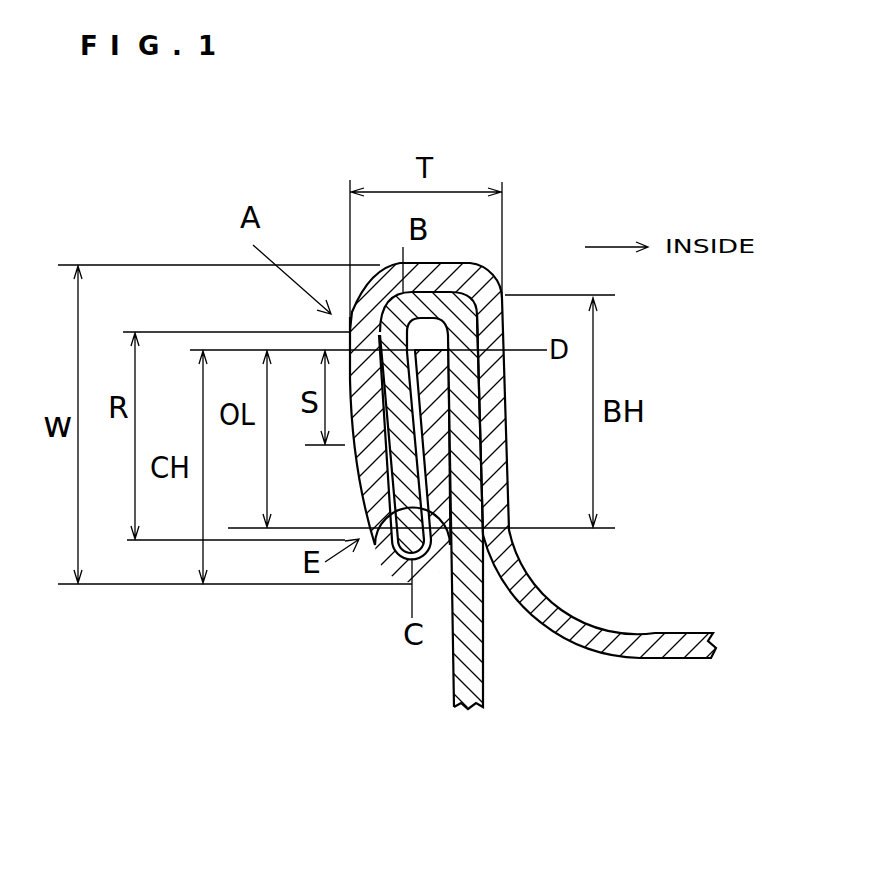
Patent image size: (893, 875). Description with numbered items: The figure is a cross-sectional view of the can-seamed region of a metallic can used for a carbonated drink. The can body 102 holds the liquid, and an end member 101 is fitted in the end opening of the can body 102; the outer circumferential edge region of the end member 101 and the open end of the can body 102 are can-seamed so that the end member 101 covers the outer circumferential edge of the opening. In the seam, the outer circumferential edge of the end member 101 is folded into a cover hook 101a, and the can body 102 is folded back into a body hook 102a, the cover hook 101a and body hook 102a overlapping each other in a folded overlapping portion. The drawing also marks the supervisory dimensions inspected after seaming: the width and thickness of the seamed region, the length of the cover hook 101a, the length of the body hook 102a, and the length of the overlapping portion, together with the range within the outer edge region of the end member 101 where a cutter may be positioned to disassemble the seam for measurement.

The end member 101 is at (600, 674).
The cover hook 101a is at (440, 447).
The can body 102 is at (431, 696).
The body hook 102a is at (397, 408).